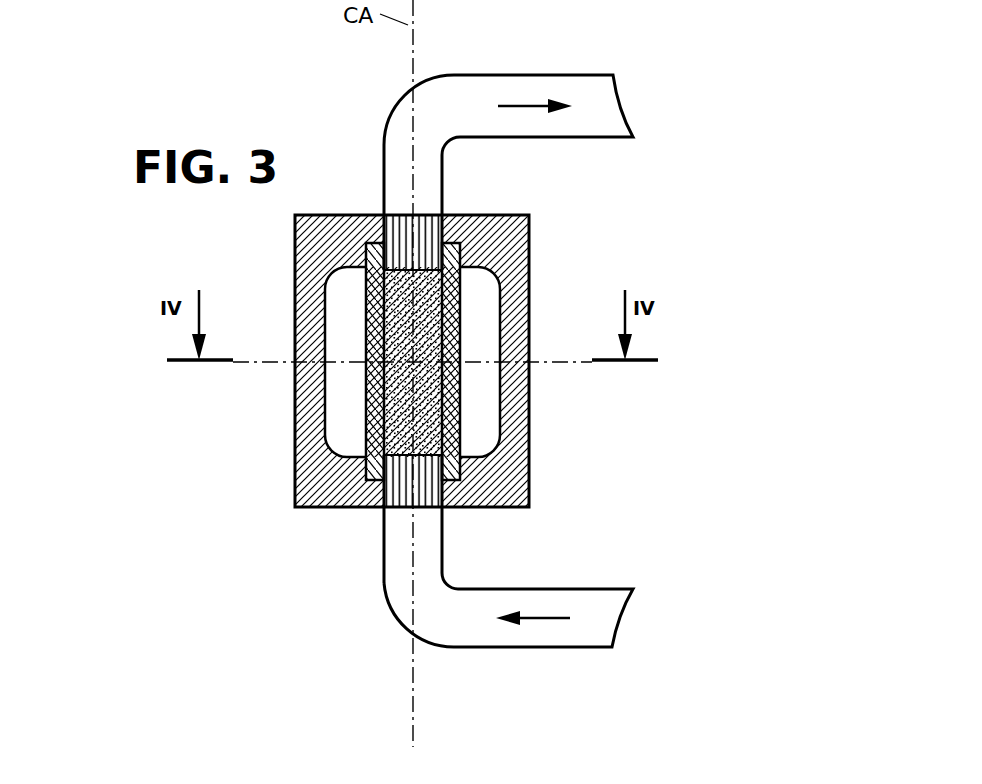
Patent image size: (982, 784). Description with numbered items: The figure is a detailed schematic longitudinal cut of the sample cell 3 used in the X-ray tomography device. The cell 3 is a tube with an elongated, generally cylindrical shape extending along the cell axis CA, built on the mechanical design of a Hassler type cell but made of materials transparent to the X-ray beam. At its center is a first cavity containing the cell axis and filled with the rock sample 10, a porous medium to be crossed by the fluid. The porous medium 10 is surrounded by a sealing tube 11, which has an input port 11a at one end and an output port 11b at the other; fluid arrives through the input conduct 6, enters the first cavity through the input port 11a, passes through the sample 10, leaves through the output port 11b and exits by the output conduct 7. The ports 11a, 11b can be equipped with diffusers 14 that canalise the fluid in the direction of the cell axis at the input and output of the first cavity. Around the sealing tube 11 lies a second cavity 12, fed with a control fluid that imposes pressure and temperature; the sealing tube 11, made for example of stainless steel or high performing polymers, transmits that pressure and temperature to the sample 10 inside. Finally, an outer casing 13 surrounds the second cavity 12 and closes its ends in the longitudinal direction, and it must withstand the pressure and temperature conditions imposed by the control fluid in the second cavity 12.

The cell 3 is at (652, 190).
The input conduct 6 is at (590, 588).
The output conduct 7 is at (568, 75).
The rock sample 10 is at (423, 310).
The sealing tube 11 is at (448, 335).
The input port 11a is at (425, 520).
The output port 11b is at (425, 200).
The second cavity 12 is at (477, 379).
The outer casing 13 is at (510, 463).
The diffusers 14 is at (402, 227).